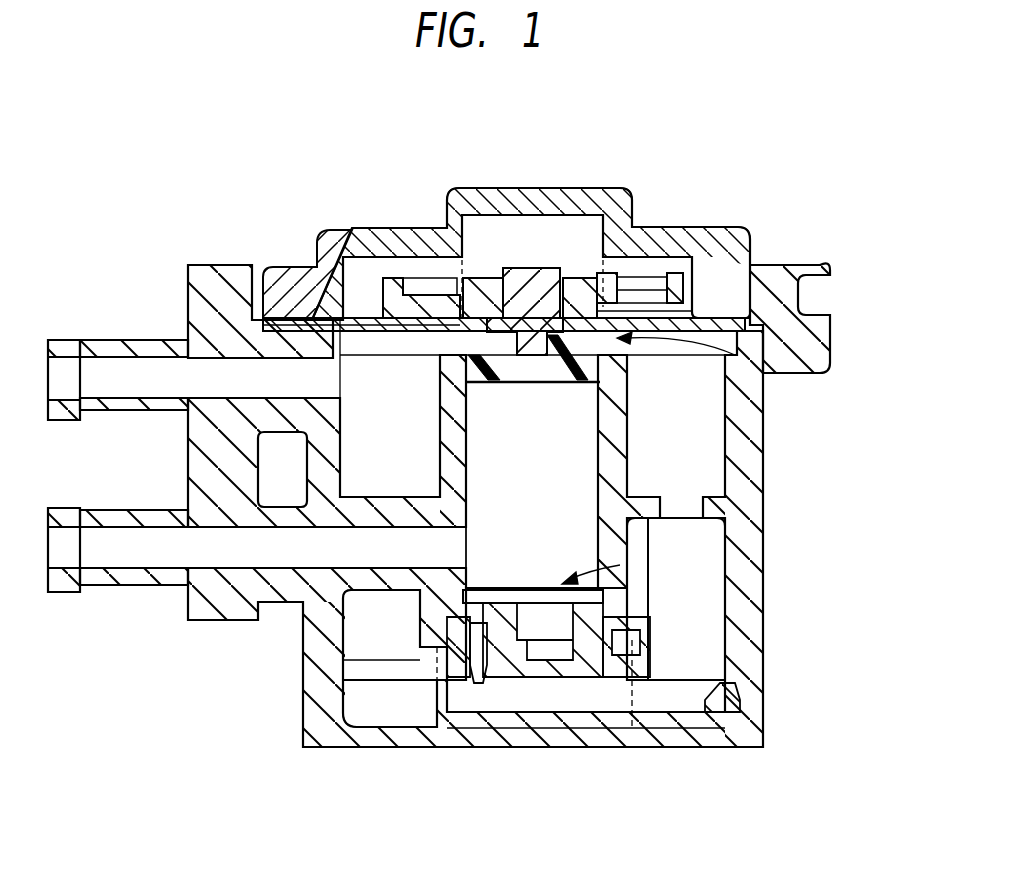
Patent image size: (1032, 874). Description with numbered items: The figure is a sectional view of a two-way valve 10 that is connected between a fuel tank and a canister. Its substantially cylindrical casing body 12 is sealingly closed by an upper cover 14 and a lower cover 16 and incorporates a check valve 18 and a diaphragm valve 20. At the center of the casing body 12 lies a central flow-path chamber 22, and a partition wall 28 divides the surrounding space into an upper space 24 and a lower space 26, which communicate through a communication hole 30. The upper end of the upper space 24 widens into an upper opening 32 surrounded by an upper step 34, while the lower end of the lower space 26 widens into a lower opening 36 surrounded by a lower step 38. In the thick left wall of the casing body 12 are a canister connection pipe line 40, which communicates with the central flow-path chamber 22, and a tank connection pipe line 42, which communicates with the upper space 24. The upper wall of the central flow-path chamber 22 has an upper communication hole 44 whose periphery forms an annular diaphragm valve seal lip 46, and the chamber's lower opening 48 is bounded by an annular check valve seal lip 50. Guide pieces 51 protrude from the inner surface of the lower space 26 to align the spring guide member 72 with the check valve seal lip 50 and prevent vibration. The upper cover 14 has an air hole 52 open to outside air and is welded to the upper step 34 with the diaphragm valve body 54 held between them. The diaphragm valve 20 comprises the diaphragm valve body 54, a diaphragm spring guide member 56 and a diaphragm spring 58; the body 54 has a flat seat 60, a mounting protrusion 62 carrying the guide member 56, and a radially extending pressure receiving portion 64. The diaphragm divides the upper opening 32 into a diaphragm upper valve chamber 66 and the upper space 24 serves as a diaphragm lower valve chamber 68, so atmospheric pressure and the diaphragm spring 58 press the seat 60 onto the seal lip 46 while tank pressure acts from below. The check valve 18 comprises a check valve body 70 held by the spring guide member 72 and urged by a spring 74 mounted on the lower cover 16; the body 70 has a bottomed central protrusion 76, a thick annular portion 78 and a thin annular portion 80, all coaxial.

The two-way valve 10 is at (751, 141).
The casing body 12 is at (743, 533).
The upper cover 14 is at (577, 192).
The lower cover 16 is at (670, 737).
The check valve 18 is at (590, 578).
The diaphragm valve 20 is at (738, 396).
The central flow-path chamber 22 is at (522, 489).
The upper space 24 is at (765, 426).
The lower space 26 is at (642, 548).
The partition wall 28 is at (648, 500).
The communication hole 30 is at (697, 490).
The upper opening 32 is at (781, 268).
The upper step 34 is at (805, 293).
The lower opening 36 is at (417, 717).
The lower step 38 is at (337, 727).
The canister connection pipe line 40 is at (155, 563).
The tank connection pipe line 42 is at (120, 367).
The upper communication hole 44 is at (540, 357).
The diaphragm valve seal lip 46 is at (497, 337).
The lower opening 48 is at (493, 593).
The check valve seal lip 50 is at (447, 598).
The guide pieces 51 is at (730, 743).
The air hole 52 is at (620, 285).
The diaphragm valve body 54 is at (600, 350).
The diaphragm spring guide member 56 is at (487, 290).
The diaphragm spring 58 is at (485, 212).
The seat 60 is at (652, 227).
The mounting protrusion 62 is at (532, 270).
The pressure receiving portion 64 is at (700, 224).
The diaphragm upper valve chamber 66 is at (707, 283).
The diaphragm lower valve chamber 68 is at (693, 440).
The check valve body 70 is at (500, 657).
The spring guide member 72 is at (427, 653).
The spring 74 is at (643, 747).
The bottomed central protrusion 76 is at (693, 672).
The thick annular portion 78 is at (642, 612).
The thin annular portion 80 is at (640, 623).